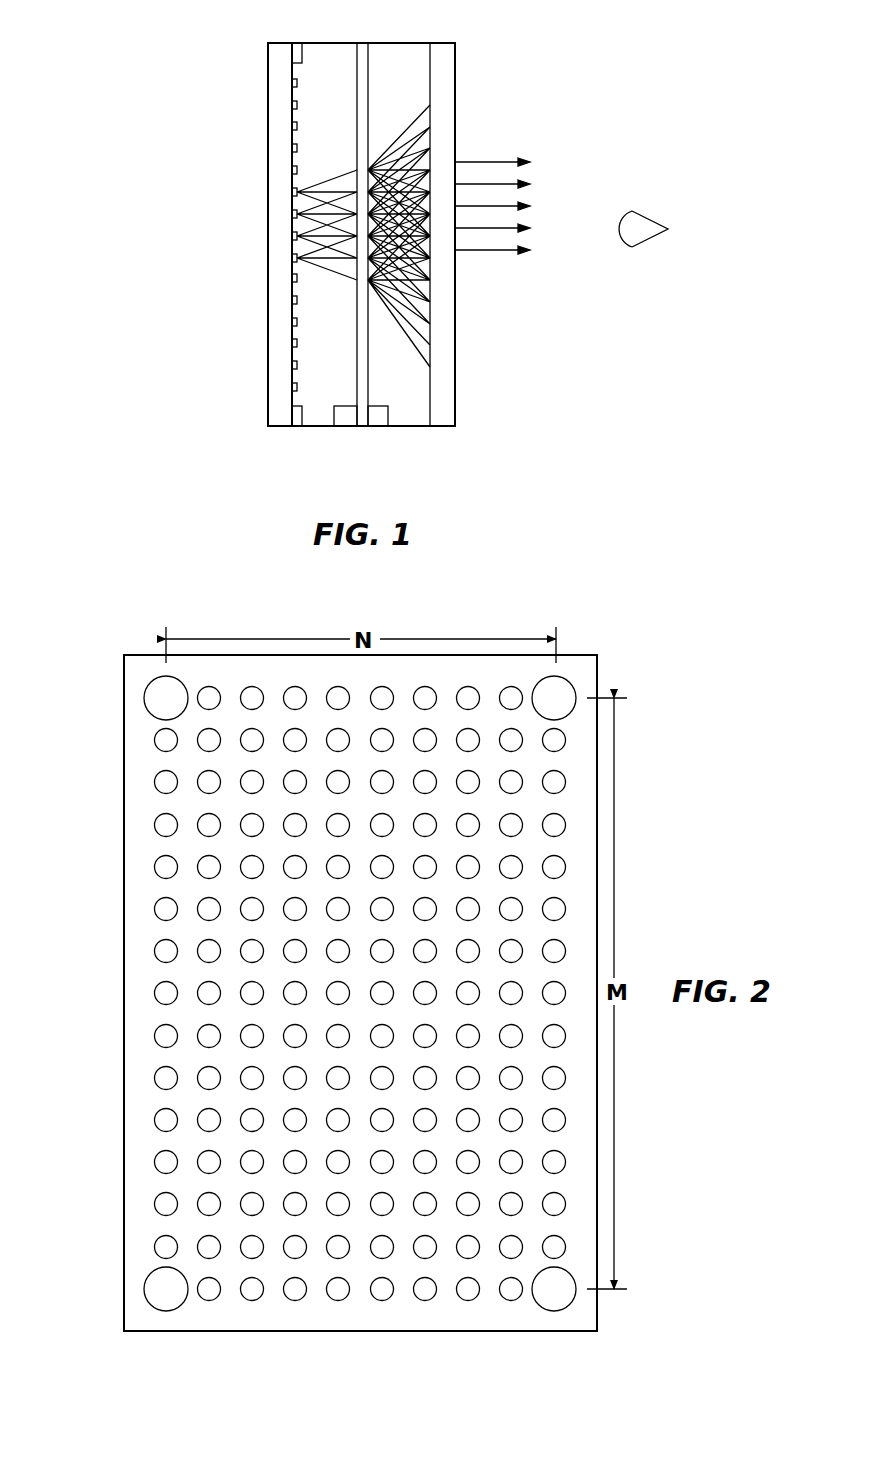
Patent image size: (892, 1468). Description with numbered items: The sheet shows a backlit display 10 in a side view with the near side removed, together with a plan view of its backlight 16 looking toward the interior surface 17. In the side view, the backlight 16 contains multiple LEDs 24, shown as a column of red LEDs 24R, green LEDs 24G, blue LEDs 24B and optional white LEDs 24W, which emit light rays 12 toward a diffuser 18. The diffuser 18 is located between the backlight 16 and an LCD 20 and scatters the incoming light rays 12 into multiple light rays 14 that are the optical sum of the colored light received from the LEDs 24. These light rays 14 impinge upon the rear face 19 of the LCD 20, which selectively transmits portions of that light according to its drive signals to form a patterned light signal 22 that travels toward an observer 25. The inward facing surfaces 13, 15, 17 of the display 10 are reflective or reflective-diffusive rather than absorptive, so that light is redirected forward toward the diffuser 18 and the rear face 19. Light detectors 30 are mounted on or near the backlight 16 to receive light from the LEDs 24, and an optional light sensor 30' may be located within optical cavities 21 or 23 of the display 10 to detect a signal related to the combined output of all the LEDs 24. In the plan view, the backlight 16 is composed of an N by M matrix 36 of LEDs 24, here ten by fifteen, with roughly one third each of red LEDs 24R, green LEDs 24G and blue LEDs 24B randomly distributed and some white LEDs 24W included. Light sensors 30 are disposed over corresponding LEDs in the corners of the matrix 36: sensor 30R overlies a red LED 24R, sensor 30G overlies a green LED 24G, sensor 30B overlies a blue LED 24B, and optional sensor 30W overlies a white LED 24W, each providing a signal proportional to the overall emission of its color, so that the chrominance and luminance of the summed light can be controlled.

In FIG. 1, the backlit display 10 is at (597, 78).
In FIG. 1, the light rays 12 is at (313, 176).
In FIG. 1, the inward facing surface 13 is at (340, 48).
In FIG. 1, the light rays 14 is at (380, 128).
In FIG. 1, the inward facing surface 15 is at (393, 45).
In FIG. 1, the backlight 16 is at (268, 348).
In FIG. 2, the backlight 16 is at (124, 1195).
In FIG. 1, the inward facing surface 17 is at (294, 343).
In FIG. 2, the inward facing surface 17 is at (488, 1303).
In FIG. 1, the diffuser 18 is at (368, 358).
In FIG. 1, the rear face 19 is at (430, 362).
In FIG. 1, the LCD 20 is at (455, 123).
In FIG. 1, the optical cavity 21 is at (323, 413).
In FIG. 1, the patterned light signal 22 is at (497, 292).
In FIG. 1, the optical cavity 23 is at (397, 415).
In FIG. 1, the LEDs 24 is at (215, 133).
In FIG. 2, the LEDs 24 is at (655, 822).
In FIG. 1, the red LEDs 24R is at (292, 192).
In FIG. 2, the red LEDs 24R is at (155, 822).
In FIG. 1, the green LEDs 24G is at (292, 214).
In FIG. 2, the green LEDs 24G is at (243, 873).
In FIG. 1, the blue LEDs 24B is at (292, 236).
In FIG. 2, the blue LEDs 24B is at (200, 955).
In FIG. 1, the white LEDs 24W is at (292, 257).
In FIG. 2, the white LEDs 24W is at (285, 1030).
In FIG. 1, the observer 25 is at (652, 217).
In FIG. 1, the light detectors 30 is at (250, 225).
In FIG. 1, the light sensor 30' is at (364, 451).
In FIG. 2, the light sensor 30G is at (166, 698).
In FIG. 2, the light sensor 30B is at (554, 698).
In FIG. 2, the light sensor 30R is at (166, 1289).
In FIG. 2, the light sensor 30W is at (554, 1289).
In FIG. 2, the N×M matrix 36 is at (655, 1197).